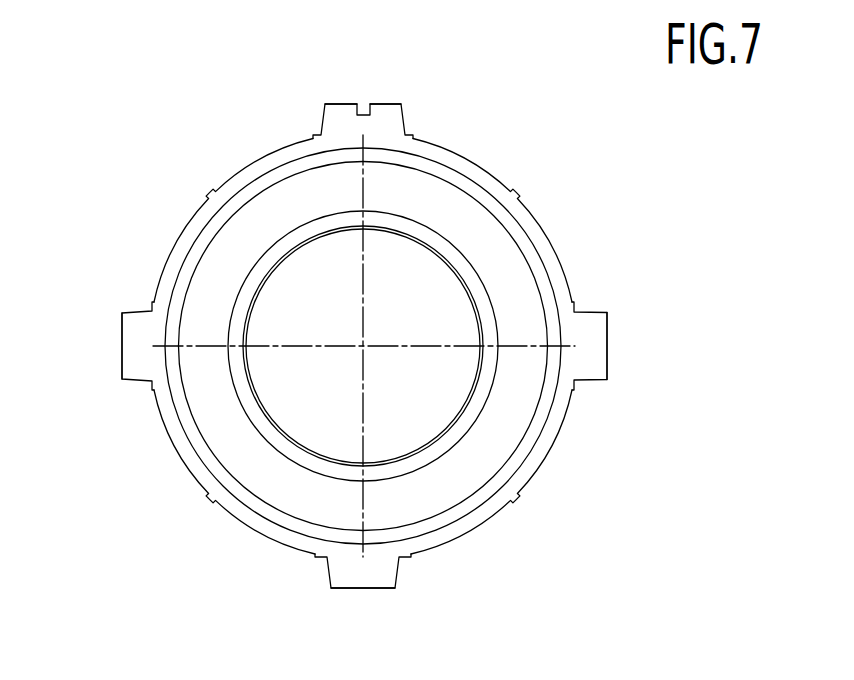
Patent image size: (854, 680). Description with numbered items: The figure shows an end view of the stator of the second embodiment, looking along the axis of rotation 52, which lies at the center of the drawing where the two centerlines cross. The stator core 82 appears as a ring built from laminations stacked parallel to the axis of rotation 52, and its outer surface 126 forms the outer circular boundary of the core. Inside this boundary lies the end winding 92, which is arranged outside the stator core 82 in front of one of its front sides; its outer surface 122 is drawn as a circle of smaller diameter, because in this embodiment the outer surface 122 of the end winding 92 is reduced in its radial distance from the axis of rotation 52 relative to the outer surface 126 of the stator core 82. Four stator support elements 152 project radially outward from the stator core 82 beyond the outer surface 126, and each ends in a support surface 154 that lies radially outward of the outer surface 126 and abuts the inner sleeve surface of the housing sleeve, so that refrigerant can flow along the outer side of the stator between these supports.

The axis of rotation 52 is at (363, 346).
The stator core 82 is at (562, 256).
The end winding 92 is at (513, 426).
The outer surface of end winding 122 is at (523, 223).
The outer surface of stator core 126 is at (472, 158).
The stator support element 152 is at (385, 118).
The support surface 154 is at (343, 103).